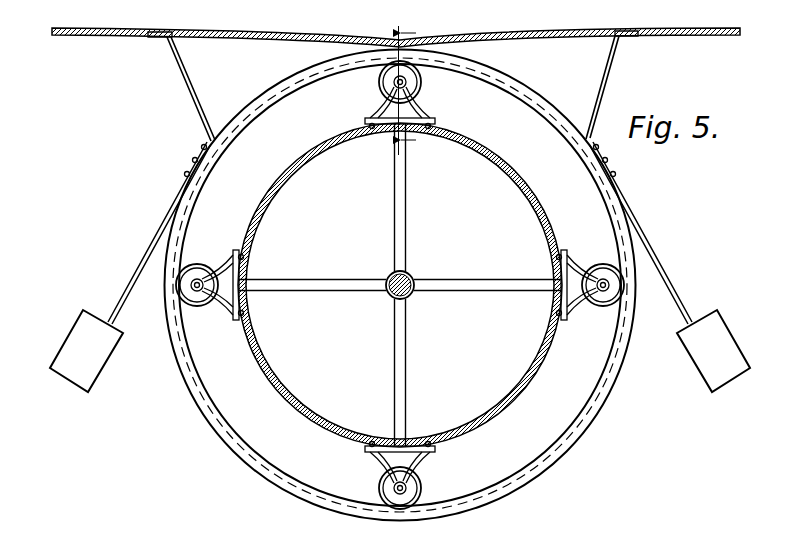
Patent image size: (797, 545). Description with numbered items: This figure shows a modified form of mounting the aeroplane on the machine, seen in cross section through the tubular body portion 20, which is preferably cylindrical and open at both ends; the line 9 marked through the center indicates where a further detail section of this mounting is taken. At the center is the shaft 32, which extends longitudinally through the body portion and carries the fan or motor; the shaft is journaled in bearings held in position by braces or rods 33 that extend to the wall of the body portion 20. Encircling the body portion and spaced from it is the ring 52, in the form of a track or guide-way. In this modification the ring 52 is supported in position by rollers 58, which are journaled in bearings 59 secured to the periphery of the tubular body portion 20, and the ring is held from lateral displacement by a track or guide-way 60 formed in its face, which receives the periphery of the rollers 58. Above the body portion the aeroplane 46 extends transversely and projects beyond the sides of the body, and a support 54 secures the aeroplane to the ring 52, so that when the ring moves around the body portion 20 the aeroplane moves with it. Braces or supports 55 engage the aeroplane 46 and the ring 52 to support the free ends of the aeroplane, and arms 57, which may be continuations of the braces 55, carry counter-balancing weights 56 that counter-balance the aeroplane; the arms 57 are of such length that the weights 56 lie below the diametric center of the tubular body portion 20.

The center axis line 9 is at (402, 85).
The aeroplane 46 is at (518, 21).
The braces or supports 55 is at (189, 88).
The arms 57 is at (152, 240).
The counter-balancing weights 56 is at (72, 352).
The ring 52 is at (203, 403).
The track or guide-way 60 is at (232, 452).
The tubular body portion 20 is at (528, 196).
The braces or rods 33 is at (396, 245).
The shaft 32 is at (392, 296).
The rollers 58 is at (378, 88).
The bearings 59 is at (416, 114).
The support 54 is at (226, 308).